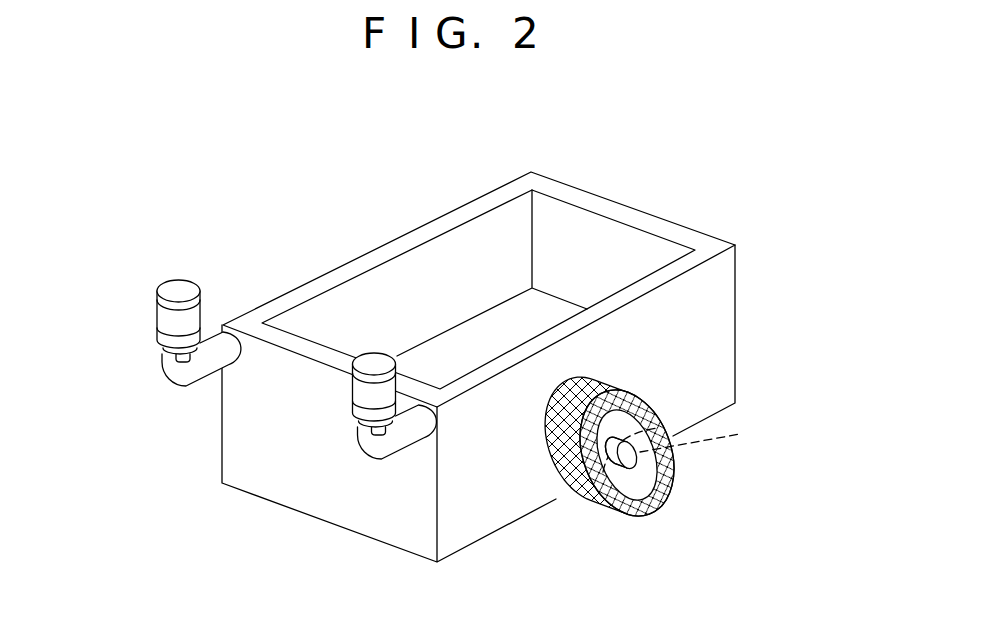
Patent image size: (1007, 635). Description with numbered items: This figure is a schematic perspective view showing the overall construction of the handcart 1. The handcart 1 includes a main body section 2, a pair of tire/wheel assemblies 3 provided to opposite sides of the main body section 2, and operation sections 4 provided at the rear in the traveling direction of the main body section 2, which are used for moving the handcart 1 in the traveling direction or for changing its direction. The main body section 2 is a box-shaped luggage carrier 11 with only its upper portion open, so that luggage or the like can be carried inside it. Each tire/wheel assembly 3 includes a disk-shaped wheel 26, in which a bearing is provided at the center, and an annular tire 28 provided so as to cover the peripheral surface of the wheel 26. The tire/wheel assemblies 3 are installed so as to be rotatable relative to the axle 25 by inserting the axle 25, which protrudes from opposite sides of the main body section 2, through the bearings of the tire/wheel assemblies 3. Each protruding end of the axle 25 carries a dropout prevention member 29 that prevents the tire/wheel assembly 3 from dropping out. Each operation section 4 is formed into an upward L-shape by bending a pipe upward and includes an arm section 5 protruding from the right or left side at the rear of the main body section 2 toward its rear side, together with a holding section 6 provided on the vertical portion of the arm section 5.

The handcart 1 is at (531, 165).
The main body section 2 is at (728, 232).
The tire/wheel assembly 3 is at (622, 528).
The operation section 4 is at (157, 413).
The arm section 5 is at (168, 375).
The holding section 6 is at (142, 299).
The luggage carrier 11 is at (395, 248).
The axle 25 is at (691, 444).
The wheel 26 is at (634, 488).
The tire 28 is at (575, 490).
The dropout prevention member 29 is at (632, 462).